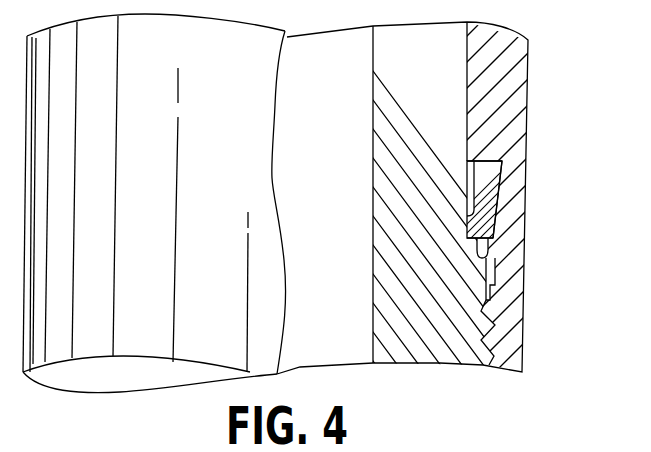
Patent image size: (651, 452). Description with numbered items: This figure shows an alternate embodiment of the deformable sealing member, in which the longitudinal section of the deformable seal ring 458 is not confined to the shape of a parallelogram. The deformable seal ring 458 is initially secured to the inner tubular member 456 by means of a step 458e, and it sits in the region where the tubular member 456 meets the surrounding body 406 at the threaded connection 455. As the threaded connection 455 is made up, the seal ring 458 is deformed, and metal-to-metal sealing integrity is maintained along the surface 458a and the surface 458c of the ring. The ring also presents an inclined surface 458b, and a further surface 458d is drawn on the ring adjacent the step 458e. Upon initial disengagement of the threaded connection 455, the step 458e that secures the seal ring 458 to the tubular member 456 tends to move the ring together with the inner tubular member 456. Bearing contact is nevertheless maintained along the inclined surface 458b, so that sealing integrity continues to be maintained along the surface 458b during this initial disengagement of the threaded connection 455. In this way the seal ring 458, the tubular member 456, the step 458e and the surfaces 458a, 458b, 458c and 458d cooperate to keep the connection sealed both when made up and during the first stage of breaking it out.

The housing 406 is at (520, 85).
The threaded connection 455 is at (497, 343).
The tubular member 456 is at (483, 310).
The deformable seal ring 458 is at (497, 203).
The surface 458a is at (500, 150).
The surface 458b is at (500, 174).
The surface 458c is at (490, 257).
The seal inner lip 458d is at (474, 187).
The step 458e is at (467, 212).